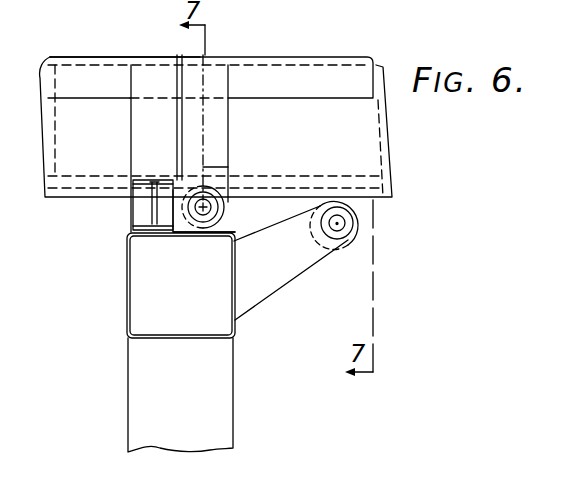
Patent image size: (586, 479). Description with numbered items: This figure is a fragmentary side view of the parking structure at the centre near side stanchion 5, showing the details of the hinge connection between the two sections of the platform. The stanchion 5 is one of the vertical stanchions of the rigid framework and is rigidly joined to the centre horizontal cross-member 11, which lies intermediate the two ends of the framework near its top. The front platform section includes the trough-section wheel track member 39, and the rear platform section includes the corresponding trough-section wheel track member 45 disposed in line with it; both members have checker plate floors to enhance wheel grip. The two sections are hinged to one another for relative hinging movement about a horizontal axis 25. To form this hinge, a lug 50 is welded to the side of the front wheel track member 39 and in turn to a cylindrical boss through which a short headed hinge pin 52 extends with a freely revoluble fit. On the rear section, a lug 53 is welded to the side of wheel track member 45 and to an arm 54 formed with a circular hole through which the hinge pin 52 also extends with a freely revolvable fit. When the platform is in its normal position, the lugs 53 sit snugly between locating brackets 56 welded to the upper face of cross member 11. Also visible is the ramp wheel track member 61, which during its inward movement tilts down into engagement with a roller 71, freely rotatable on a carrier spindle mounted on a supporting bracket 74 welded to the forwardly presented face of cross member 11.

The vertical stanchion 5 is at (133, 367).
The centre horizontal cross-member 11 is at (138, 290).
The horizontal axis 25 is at (215, 211).
The trough-section wheel track member 39 is at (287, 76).
The trough-section wheel track member 45 is at (97, 70).
The lug 50 is at (222, 129).
The hinge pin 52 is at (203, 212).
The lug 53 is at (141, 122).
The arm 54 is at (193, 180).
The locating bracket 56 is at (142, 205).
The trough section wheel track member 61 is at (71, 198).
The roller 71 is at (347, 248).
The supporting bracket 74 is at (268, 277).